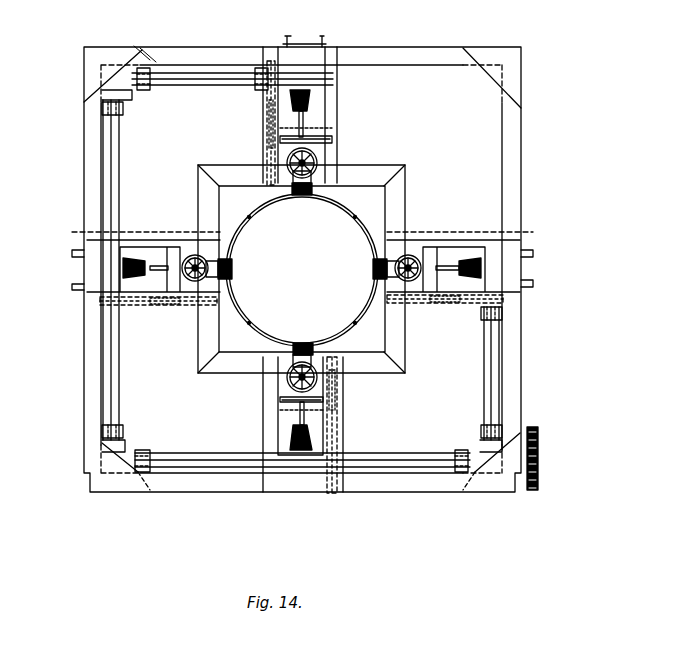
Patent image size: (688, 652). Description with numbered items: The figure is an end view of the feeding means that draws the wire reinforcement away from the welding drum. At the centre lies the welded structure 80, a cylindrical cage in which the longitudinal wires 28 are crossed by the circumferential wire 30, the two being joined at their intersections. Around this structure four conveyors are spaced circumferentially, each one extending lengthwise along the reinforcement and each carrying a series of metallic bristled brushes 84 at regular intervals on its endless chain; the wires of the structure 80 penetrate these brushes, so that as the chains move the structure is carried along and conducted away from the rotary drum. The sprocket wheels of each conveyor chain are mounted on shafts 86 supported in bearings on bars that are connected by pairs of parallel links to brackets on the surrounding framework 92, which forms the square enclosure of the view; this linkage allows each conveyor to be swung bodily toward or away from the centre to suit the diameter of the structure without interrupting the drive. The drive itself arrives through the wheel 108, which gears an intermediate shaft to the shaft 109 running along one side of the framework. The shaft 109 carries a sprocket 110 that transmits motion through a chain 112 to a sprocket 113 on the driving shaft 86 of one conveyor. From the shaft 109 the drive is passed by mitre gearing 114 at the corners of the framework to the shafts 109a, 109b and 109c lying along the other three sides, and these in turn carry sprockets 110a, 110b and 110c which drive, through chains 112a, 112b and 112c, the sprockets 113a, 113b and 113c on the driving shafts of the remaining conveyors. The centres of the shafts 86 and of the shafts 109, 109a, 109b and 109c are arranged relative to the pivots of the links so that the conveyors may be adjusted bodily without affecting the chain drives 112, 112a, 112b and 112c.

The longitudinal wires 28 is at (360, 233).
The circumferential wire 30 is at (253, 212).
The welded structure 80 is at (355, 208).
The metallic bristled brushes 84 is at (470, 258).
The shafts 86 is at (188, 248).
The framework 92 is at (444, 50).
The wheel 108 is at (540, 440).
The shaft 109 is at (437, 470).
The shaft 109a is at (107, 368).
The shaft 109b is at (232, 74).
The shaft 109c is at (490, 368).
The sprocket 110 is at (340, 490).
The sprocket 110a is at (100, 302).
The sprocket 110b is at (271, 60).
The sprocket 110c is at (505, 300).
The chain 112 is at (338, 434).
The chain 112a is at (132, 305).
The chain 112b is at (268, 103).
The chain 112c is at (468, 305).
The sprocket 113 is at (338, 394).
The sprocket 113a is at (185, 305).
The sprocket 113b is at (270, 122).
The sprocket 113c is at (450, 305).
The mitre gearing 114 is at (124, 96).